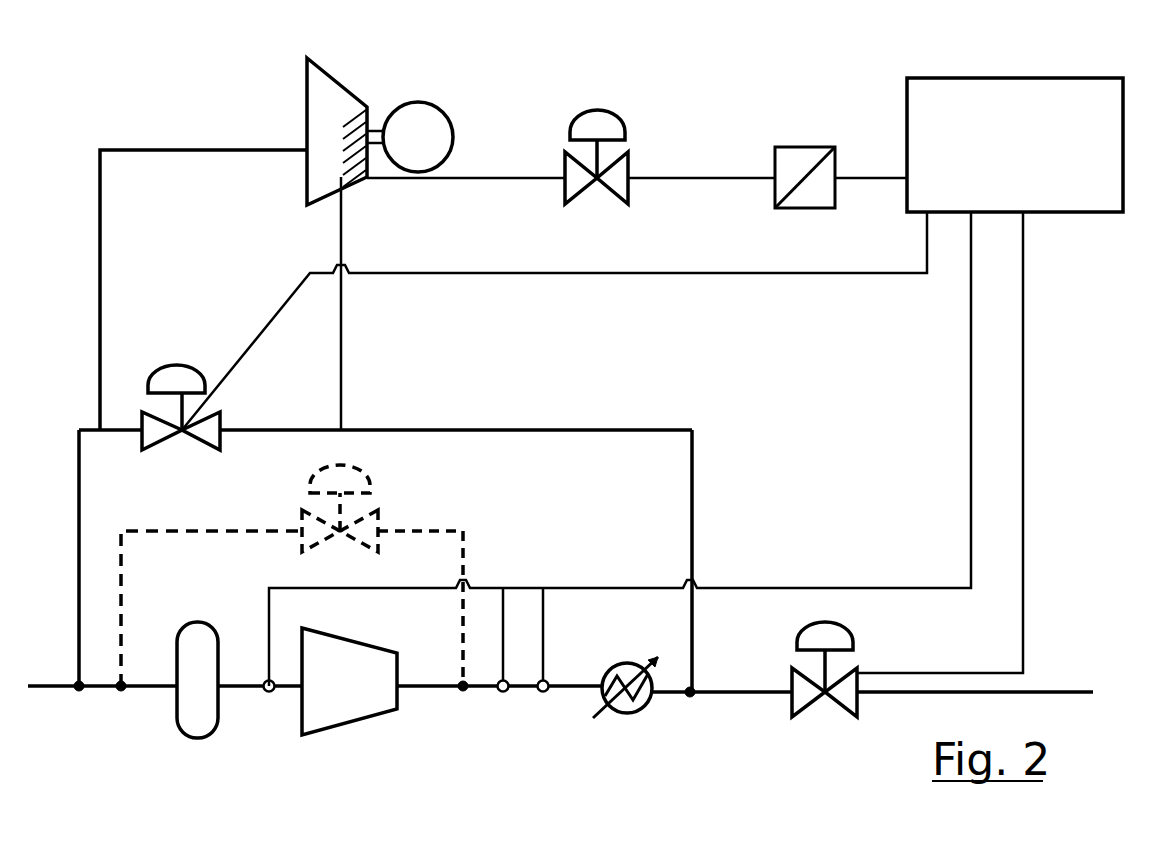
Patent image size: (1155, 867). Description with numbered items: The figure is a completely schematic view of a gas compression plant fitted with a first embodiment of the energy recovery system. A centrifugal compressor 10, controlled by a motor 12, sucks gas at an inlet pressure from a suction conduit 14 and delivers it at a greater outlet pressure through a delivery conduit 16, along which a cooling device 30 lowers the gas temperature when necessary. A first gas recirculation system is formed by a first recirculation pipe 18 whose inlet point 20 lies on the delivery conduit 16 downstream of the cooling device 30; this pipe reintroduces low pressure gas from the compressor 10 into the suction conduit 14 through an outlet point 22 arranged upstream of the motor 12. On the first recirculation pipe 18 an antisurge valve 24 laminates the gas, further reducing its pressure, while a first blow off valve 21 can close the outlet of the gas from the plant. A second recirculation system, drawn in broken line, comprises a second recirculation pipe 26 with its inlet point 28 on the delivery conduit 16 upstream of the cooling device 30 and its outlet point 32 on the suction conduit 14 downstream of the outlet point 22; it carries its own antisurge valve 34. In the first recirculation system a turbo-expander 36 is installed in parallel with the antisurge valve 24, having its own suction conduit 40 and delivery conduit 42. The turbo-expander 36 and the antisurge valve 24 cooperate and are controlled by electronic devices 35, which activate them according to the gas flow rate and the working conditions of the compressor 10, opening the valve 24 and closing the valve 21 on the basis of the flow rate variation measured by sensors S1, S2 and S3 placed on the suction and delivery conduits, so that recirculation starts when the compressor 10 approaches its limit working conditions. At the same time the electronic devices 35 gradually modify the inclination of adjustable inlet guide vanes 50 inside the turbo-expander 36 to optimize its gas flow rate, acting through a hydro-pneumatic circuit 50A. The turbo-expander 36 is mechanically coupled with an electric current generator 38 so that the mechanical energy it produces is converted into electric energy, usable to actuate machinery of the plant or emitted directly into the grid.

The compressor 10 is at (330, 735).
The motor 12 is at (195, 740).
The suction conduit 14 is at (238, 690).
The delivery conduit 16 is at (423, 684).
The first recirculation pipe 18 is at (517, 430).
The inlet point 20 is at (690, 700).
The first blow off valve 21 is at (832, 702).
The outlet point 22 is at (79, 692).
The antisurge valve 24 is at (146, 412).
The second recirculation pipe 26 is at (230, 530).
The inlet point 28 is at (463, 692).
The cooling device 30 is at (620, 712).
The outlet point 32 is at (121, 692).
The antisurge valve 34 is at (380, 520).
The electronic devices 35 is at (1077, 88).
The turbo-expander 36 is at (330, 97).
The electric current generator 38 is at (418, 107).
The suction conduit 40 is at (343, 322).
The delivery conduit 42 is at (99, 200).
The inlet guide vanes 50 is at (352, 181).
The hydro-pneumatic circuit 50A is at (700, 210).
The sensor S1 is at (266, 681).
The sensor S2 is at (505, 692).
The sensor S3 is at (548, 684).